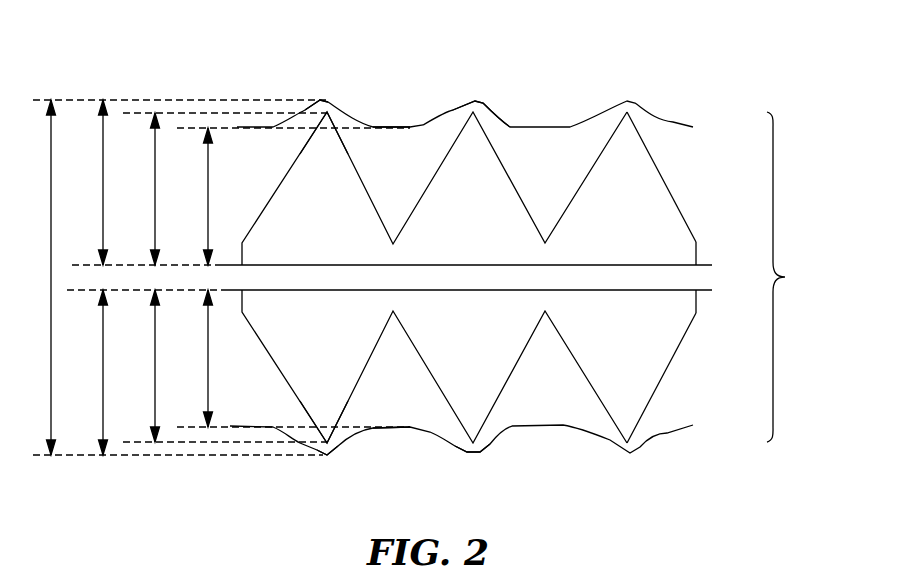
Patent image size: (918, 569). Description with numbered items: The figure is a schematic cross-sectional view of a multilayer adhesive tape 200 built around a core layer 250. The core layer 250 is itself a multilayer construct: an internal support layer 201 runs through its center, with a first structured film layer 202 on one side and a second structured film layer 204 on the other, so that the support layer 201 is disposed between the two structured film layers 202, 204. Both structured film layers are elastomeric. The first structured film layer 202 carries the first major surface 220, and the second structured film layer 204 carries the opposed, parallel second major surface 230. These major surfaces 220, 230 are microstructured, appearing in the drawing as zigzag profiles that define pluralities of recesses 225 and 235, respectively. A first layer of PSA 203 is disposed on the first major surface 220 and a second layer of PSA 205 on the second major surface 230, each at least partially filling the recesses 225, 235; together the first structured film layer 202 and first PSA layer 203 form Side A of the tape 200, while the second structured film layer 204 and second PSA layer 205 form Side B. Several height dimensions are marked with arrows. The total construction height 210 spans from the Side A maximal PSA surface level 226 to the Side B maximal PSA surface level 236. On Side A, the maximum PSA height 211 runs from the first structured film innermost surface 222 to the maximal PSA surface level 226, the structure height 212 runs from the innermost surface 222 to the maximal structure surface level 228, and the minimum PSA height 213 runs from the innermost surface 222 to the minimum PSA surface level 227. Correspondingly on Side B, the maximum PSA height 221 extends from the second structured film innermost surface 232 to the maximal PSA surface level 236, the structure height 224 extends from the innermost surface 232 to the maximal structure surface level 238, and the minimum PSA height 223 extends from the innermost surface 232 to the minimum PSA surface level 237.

The multilayer adhesive tape 200 is at (663, 67).
The internal support layer 201 is at (695, 279).
The first structured film layer 202 is at (660, 205).
The first layer of PSA 203 is at (565, 148).
The second structured film layer 204 is at (660, 348).
The second layer of PSA 205 is at (565, 403).
The total construction height 210 is at (50, 273).
The Side A maximum PSA height 211 is at (103, 187).
The Side A structure height 212 is at (155, 187).
The Side A minimum PSA height 213 is at (208, 187).
The first major surface 220 is at (653, 165).
The Side B maximum PSA height 221 is at (103, 368).
The first structured film innermost surface 222 is at (663, 265).
The Side B minimum PSA height 223 is at (208, 368).
The Side B structure height 224 is at (155, 368).
The recesses 225 is at (520, 142).
The maximal PSA surface level 226 is at (327, 111).
The minimum PSA surface level 227 is at (412, 127).
The maximal structure surface level 228 is at (315, 110).
The second major surface 230 is at (653, 390).
The second structured film innermost surface 232 is at (663, 290).
The recesses 235 is at (520, 412).
The maximal PSA surface level 236 is at (328, 447).
The minimum PSA surface level 237 is at (410, 428).
The maximal structure surface level 238 is at (333, 444).
The core layer 250 is at (800, 277).